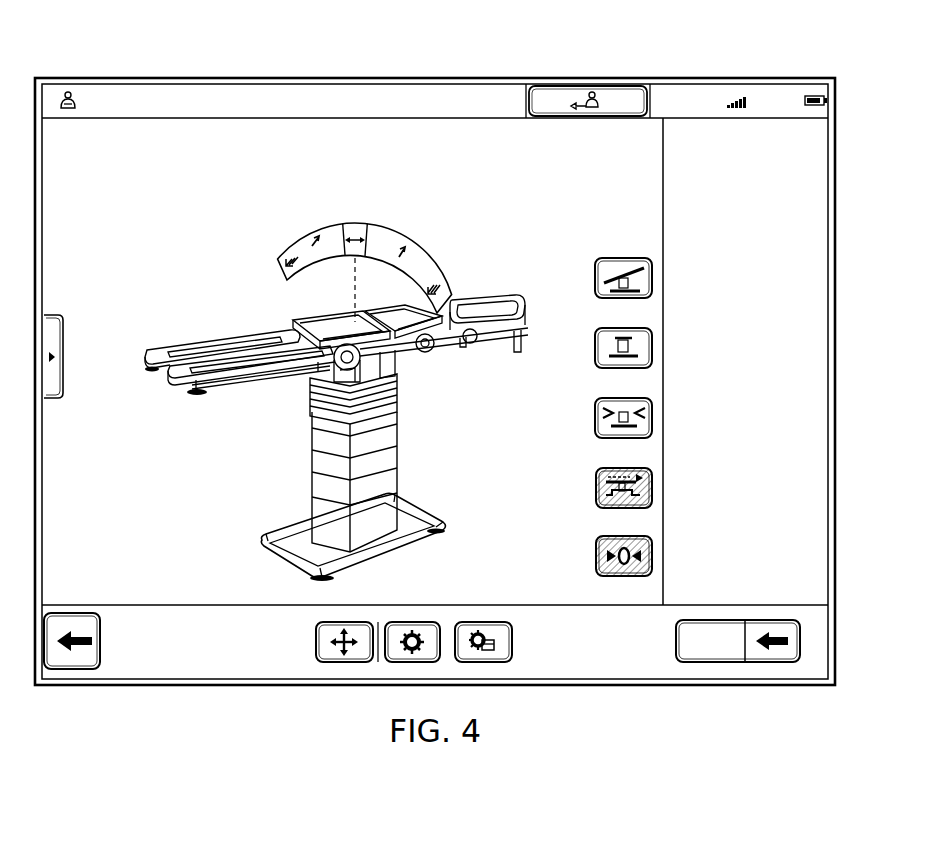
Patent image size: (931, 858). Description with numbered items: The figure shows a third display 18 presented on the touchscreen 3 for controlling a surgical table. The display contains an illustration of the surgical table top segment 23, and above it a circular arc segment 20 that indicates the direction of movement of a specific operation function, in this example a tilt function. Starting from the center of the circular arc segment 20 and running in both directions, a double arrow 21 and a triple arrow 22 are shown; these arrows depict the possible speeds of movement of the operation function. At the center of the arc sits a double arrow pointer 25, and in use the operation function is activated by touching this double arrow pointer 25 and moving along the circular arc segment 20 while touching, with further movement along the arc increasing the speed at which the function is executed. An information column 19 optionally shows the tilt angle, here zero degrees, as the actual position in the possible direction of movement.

The touchscreen 3 is at (435, 381).
The third display 18 is at (503, 68).
The information column 19 is at (682, 145).
The circular arc segment 20 is at (450, 290).
The double arrow 21 is at (315, 237).
The triple arrow 22 is at (288, 253).
The surgical table top segment 23 is at (383, 330).
The double arrow pointer 25 is at (350, 257).